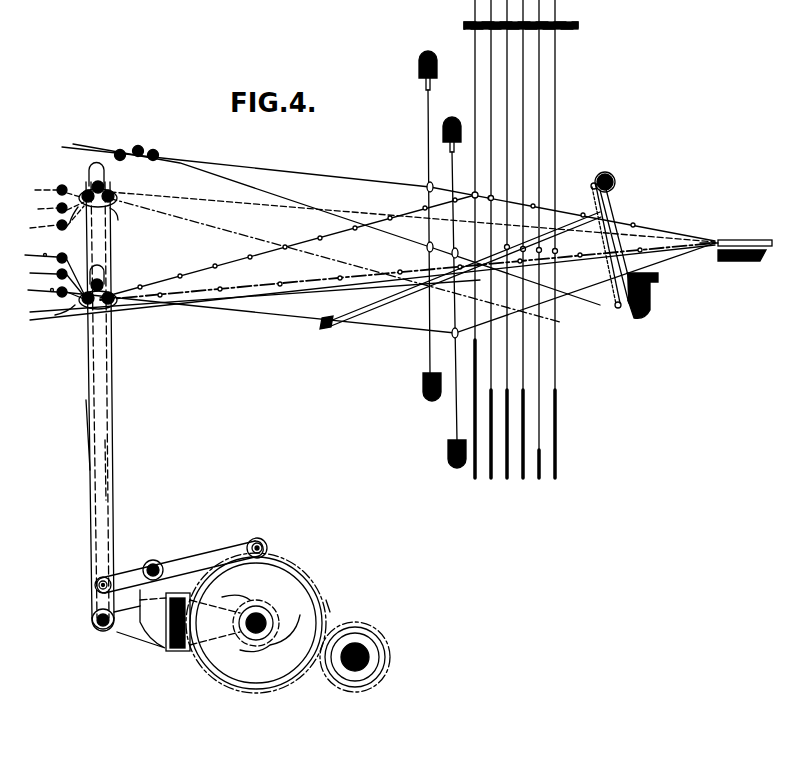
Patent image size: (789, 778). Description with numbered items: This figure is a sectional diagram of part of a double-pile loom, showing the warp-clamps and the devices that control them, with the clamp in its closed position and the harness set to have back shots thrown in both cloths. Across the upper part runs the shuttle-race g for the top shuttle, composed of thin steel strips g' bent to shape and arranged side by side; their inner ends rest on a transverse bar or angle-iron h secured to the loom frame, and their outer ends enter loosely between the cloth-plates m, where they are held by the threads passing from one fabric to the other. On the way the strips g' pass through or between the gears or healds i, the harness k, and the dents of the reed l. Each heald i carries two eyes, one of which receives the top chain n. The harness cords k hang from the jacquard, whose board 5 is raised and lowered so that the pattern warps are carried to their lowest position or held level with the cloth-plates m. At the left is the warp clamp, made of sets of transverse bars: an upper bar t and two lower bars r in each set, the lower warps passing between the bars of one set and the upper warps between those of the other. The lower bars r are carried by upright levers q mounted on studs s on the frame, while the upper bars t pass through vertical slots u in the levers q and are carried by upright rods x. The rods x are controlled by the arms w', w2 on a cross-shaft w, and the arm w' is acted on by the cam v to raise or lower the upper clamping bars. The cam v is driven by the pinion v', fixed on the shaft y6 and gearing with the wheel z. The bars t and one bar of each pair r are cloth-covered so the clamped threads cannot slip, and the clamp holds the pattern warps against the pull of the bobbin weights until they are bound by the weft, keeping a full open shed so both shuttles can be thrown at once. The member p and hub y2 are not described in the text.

The top chain n is at (331, 224).
The vertical slots u is at (104, 272).
The upper bar t is at (104, 187).
The lower bars r is at (76, 250).
The rod p is at (104, 405).
The upright levers q is at (98, 428).
The upright rods x is at (100, 470).
The harness k is at (515, 239).
The board 5 is at (521, 34).
The gears or healds i is at (441, 259).
The thin strips g' is at (465, 269).
The transverse bar or angle-iron h is at (323, 334).
The shuttle-race g is at (622, 207).
The reed l is at (622, 250).
The cloth-plates m is at (736, 249).
The cross-shaft w is at (178, 567).
The arm w' is at (247, 543).
The arm w2 is at (114, 575).
The studs s is at (96, 628).
The cam v is at (233, 623).
The hub y2 is at (266, 618).
The wheel z is at (331, 605).
The pinion v' is at (362, 657).
The shaft y6 is at (355, 645).